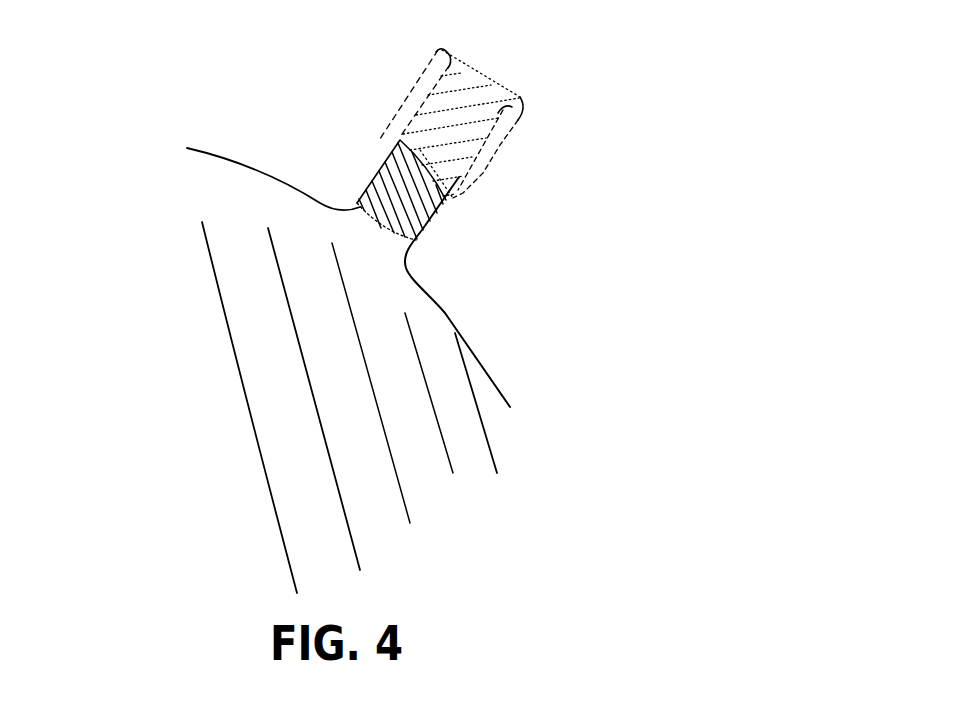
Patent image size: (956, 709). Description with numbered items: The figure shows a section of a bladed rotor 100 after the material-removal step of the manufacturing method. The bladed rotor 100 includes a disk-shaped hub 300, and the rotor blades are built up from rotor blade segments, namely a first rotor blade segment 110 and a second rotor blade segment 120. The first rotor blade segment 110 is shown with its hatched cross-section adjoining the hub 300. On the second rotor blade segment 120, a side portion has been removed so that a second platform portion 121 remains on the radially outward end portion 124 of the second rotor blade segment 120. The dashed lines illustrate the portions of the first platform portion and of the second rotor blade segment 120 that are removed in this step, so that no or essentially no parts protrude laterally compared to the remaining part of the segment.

The bladed rotor 100 is at (160, 116).
The first rotor blade segment 110 is at (344, 170).
The second rotor blade segment 120 is at (485, 155).
The second platform portion 121 is at (538, 109).
The radially outward end portion 124 is at (395, 85).
The hub 300 is at (505, 354).